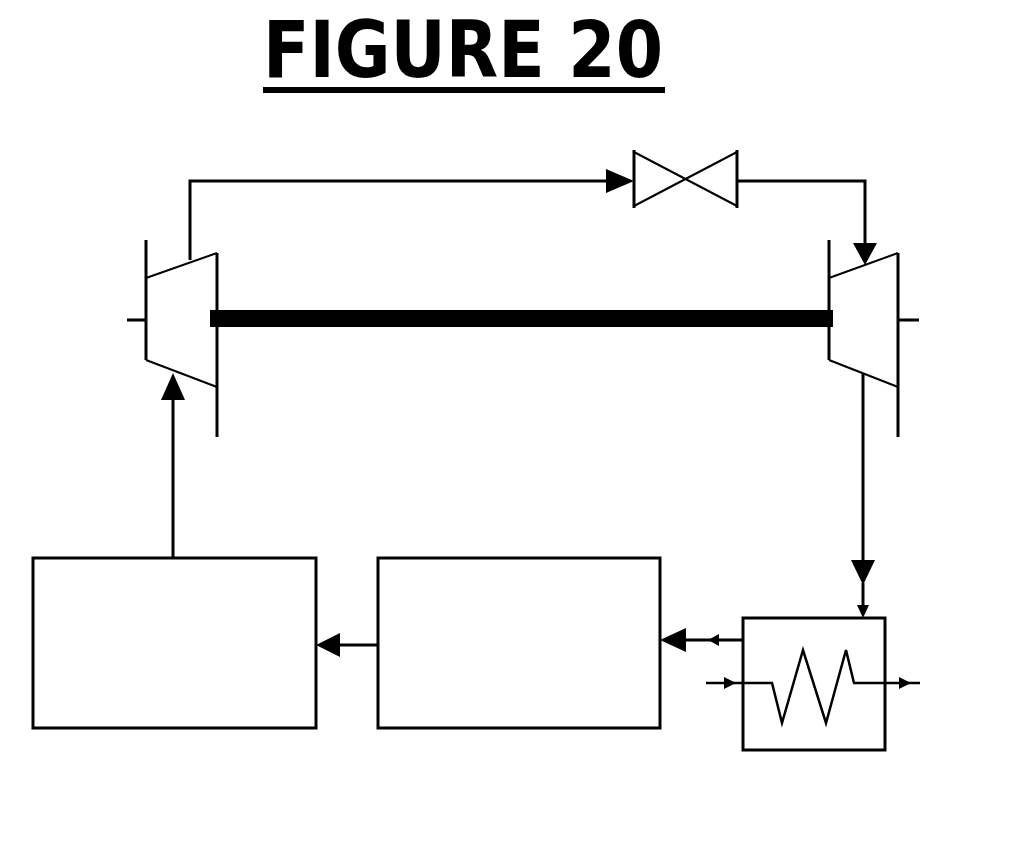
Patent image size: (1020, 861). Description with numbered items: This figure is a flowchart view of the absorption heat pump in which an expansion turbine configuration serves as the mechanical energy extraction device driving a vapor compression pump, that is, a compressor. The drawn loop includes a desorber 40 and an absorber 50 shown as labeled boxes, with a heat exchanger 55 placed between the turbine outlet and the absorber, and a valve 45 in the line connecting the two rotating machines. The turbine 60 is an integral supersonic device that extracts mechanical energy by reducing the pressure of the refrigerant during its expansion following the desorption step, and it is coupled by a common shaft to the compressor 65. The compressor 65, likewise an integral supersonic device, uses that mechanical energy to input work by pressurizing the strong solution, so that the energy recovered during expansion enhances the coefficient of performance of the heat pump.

The desorber 40 is at (174, 643).
The valve 45 is at (685, 204).
The absorber 50 is at (519, 643).
The heat exchanger 55 is at (813, 721).
The turbine 60 is at (874, 338).
The compressor 65 is at (172, 338).